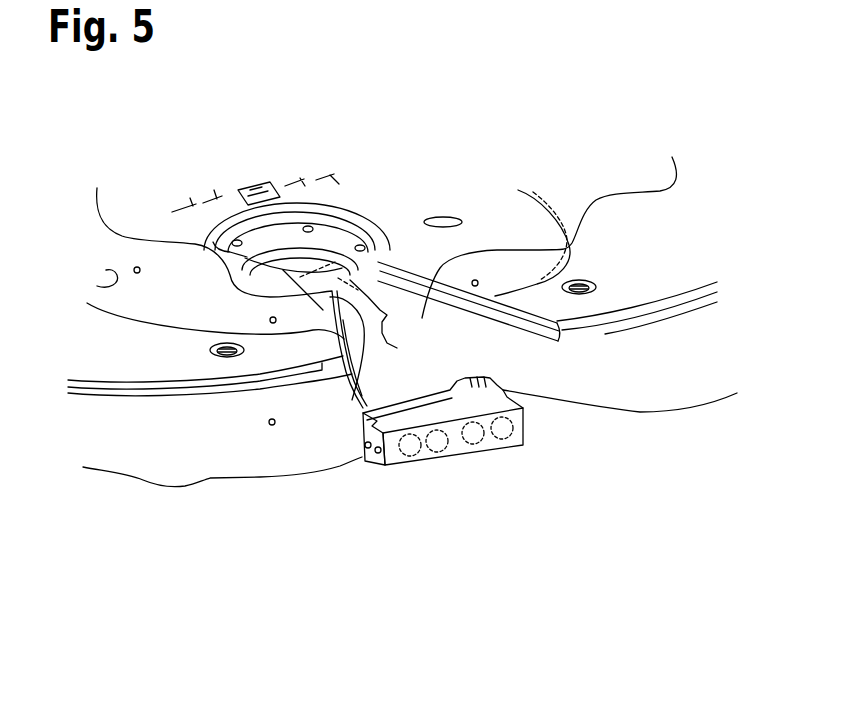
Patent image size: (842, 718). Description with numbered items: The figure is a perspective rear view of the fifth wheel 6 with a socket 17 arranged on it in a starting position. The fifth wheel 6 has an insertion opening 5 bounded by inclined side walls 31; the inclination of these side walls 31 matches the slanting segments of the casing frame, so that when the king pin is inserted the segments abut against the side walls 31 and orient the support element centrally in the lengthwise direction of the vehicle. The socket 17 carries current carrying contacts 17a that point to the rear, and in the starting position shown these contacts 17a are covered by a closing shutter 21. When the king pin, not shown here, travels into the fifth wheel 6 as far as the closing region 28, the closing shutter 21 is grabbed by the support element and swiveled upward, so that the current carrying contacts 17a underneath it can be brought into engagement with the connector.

The insertion opening 5 is at (408, 368).
The fifth wheel 6 is at (486, 168).
The socket 17 is at (366, 455).
The current carrying contacts 17a is at (483, 443).
The closing shutter 21 is at (458, 448).
The closing region 28 is at (313, 268).
The side walls 31 is at (392, 268).